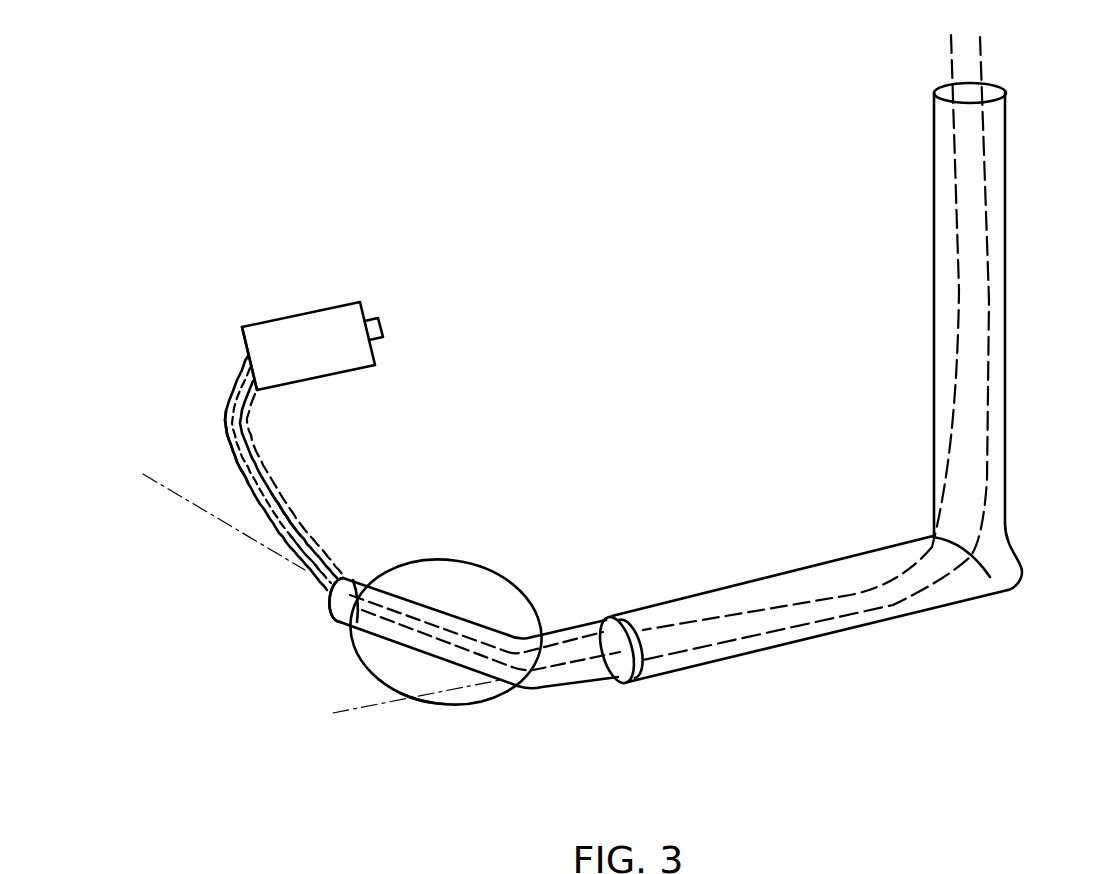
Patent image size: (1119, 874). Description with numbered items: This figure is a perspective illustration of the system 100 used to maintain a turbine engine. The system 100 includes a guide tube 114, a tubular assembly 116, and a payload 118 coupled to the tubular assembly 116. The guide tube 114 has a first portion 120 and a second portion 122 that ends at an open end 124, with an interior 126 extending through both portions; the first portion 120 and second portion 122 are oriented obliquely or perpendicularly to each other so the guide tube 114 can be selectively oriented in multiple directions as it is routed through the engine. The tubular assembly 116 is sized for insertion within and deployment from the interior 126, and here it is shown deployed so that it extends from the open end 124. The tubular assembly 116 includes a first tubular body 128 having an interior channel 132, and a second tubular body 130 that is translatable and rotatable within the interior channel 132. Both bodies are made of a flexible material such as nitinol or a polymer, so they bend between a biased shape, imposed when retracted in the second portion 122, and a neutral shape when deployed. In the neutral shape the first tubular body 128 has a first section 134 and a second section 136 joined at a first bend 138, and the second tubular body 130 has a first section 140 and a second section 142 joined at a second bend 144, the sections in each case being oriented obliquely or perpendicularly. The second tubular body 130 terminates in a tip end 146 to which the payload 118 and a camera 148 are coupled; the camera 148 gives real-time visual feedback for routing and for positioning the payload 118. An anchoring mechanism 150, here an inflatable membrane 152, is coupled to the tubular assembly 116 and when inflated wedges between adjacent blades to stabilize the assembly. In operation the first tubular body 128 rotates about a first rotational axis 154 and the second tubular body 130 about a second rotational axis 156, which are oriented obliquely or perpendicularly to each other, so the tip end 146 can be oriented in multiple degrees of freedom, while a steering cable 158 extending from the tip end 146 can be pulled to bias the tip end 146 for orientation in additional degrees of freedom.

The system 100 is at (690, 70).
The guide tube 114 is at (1006, 418).
The tubular assembly 116 is at (441, 514).
The payload 118 is at (318, 306).
The first portion 120 is at (1006, 262).
The second portion 122 is at (760, 651).
The open end 124 is at (602, 618).
The interior 126 is at (787, 585).
The first tubular body 128 is at (331, 636).
The second tubular body 130 is at (212, 428).
The interior channel 132 is at (340, 575).
The first section 134 is at (593, 678).
The second section 136 is at (356, 581).
The first bend 138 is at (547, 688).
The first section 140 is at (307, 591).
The second section 142 is at (233, 466).
The second bend 144 is at (293, 574).
The tip end 146 is at (233, 332).
The camera 148 is at (385, 329).
The anchoring mechanism 150 is at (466, 716).
The inflatable membrane 152 is at (400, 693).
The first rotational axis 154 is at (368, 714).
The second rotational axis 156 is at (177, 508).
The steering cable 158 is at (903, 570).